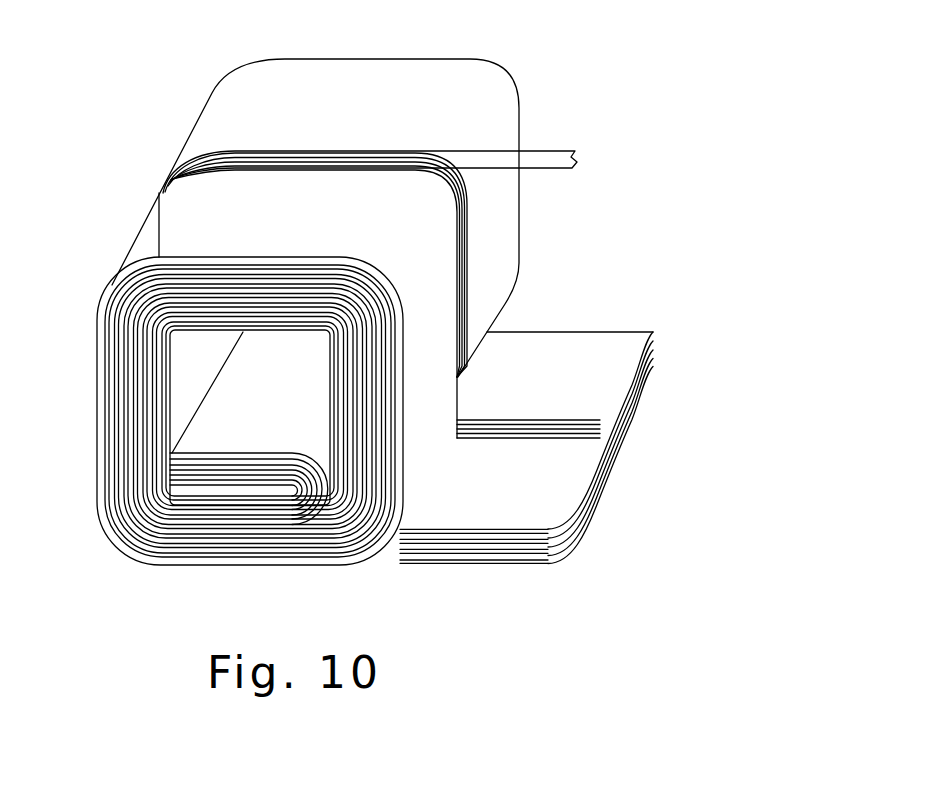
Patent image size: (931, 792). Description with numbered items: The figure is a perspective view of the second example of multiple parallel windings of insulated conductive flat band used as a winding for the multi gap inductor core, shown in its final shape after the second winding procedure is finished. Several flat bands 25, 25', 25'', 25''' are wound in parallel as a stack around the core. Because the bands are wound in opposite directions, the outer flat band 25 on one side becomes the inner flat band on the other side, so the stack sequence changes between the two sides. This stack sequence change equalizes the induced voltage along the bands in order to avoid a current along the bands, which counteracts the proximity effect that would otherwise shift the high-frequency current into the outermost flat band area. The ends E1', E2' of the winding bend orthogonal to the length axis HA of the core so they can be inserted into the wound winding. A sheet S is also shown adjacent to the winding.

The flat band 25 is at (646, 461).
The flat band 25' is at (644, 446).
The flat band 25'' is at (644, 433).
The flat band 25''' is at (642, 436).
The end E1' is at (581, 400).
The end E2' is at (474, 569).
The length axis of the core HA is at (262, 378).
The sheet / substrate S is at (382, 170).